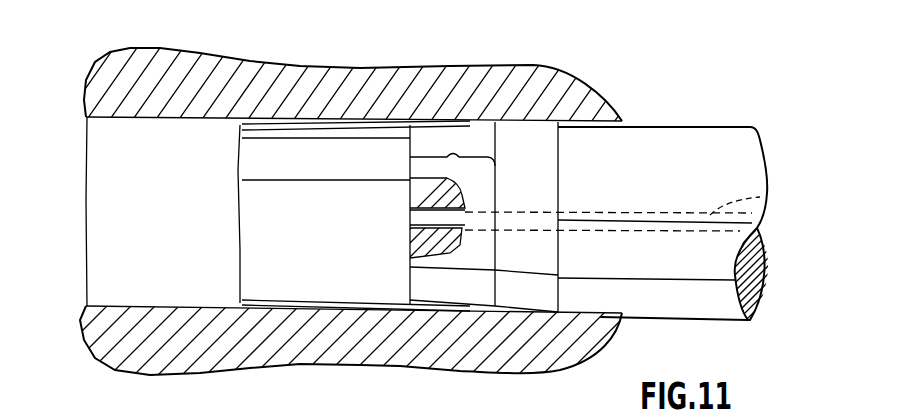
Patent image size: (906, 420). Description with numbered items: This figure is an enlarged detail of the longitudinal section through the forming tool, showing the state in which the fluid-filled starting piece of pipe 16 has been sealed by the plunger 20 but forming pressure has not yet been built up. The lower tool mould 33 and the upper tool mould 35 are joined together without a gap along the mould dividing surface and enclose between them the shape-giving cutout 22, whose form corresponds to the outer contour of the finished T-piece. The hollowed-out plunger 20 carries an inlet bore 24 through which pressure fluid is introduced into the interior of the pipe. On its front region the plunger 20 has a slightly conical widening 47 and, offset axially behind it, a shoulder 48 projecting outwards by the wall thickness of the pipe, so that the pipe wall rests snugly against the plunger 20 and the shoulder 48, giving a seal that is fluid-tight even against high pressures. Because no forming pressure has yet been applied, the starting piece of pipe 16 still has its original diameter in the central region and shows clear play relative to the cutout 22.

The starting piece of pipe 16 is at (335, 297).
The plunger 20 is at (723, 147).
The cutout 22 is at (116, 296).
The inlet bore 24 is at (776, 196).
The lower tool mould 33 is at (575, 340).
The upper tool mould 35 is at (588, 106).
The conical widening 47 is at (453, 153).
The shoulder 48 is at (558, 188).